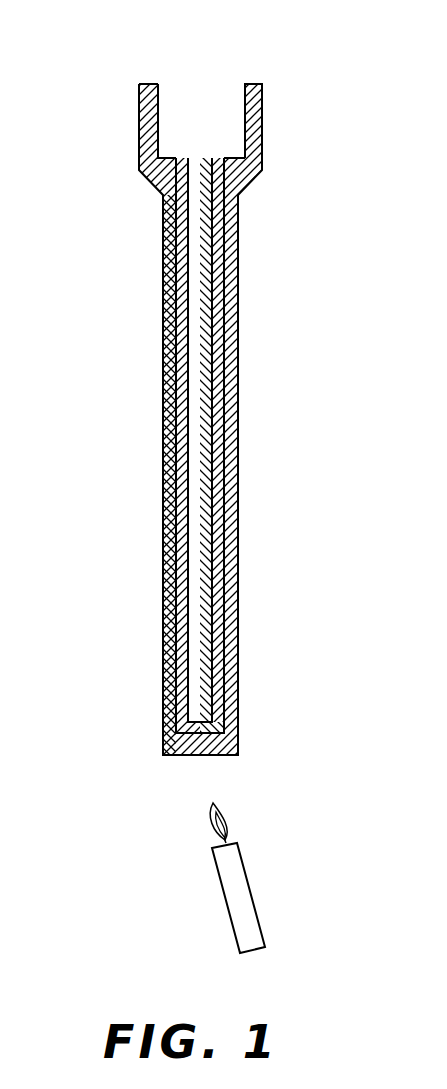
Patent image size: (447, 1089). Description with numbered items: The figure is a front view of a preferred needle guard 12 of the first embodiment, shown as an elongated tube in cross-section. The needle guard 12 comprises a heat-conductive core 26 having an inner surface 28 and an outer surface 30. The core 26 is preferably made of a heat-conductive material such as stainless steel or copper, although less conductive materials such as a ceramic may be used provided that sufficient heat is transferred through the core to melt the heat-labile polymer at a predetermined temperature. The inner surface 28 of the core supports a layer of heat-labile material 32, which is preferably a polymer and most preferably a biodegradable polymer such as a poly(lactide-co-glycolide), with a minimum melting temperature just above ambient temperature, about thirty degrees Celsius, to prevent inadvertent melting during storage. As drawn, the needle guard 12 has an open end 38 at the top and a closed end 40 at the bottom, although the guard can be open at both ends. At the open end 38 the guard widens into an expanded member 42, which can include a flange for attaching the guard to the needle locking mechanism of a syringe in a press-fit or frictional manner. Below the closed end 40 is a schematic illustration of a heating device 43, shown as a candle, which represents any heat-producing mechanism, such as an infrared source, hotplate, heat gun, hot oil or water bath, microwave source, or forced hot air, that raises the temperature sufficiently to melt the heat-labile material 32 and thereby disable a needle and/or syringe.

The needle guard 12 is at (211, 417).
The heat-conductive core 26 is at (233, 625).
The inner surface 28 is at (232, 503).
The outer surface 30 is at (238, 222).
The heat-labile material 32 is at (213, 318).
The open end 38 is at (188, 64).
The closed end 40 is at (182, 772).
The expanded member 42 is at (262, 109).
The heating device 43 is at (248, 870).